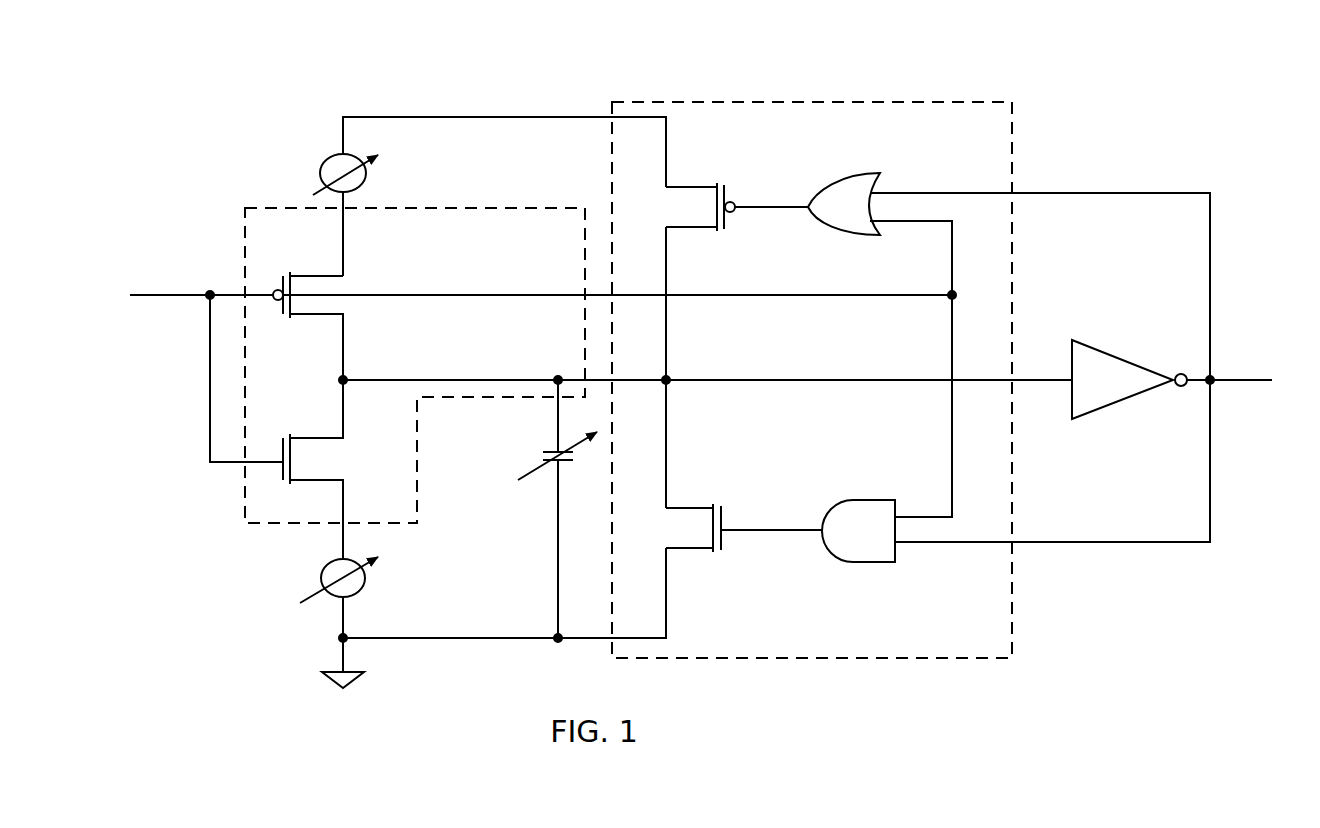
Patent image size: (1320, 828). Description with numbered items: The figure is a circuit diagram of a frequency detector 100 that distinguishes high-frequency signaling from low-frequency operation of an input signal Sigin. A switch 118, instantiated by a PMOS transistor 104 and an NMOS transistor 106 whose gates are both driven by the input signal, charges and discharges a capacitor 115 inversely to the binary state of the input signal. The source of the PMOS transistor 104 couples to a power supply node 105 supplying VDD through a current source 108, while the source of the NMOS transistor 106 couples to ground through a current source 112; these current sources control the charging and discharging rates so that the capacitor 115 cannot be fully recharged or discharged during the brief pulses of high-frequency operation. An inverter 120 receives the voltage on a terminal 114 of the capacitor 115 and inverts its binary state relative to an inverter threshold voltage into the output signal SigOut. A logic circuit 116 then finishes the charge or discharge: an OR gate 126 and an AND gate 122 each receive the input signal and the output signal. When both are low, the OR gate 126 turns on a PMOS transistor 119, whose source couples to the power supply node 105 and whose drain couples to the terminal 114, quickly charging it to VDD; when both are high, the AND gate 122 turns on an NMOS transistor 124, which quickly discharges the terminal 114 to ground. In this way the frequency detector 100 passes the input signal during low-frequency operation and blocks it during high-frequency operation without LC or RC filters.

The frequency detector 100 is at (598, 57).
The PMOS transistor 104 is at (312, 272).
The power supply node 105 is at (377, 117).
The NMOS transistor 106 is at (312, 437).
The current source 108 is at (367, 176).
The current source 112 is at (365, 583).
The terminal 114 is at (548, 450).
The capacitor 115 is at (526, 455).
The logic circuit 116 is at (914, 647).
The switch 118 is at (250, 207).
The PMOS transistor 119 is at (695, 187).
The inverter 120 is at (1133, 362).
The AND gate 122 is at (864, 500).
The NMOS transistor 124 is at (695, 508).
The OR gate 126 is at (845, 175).